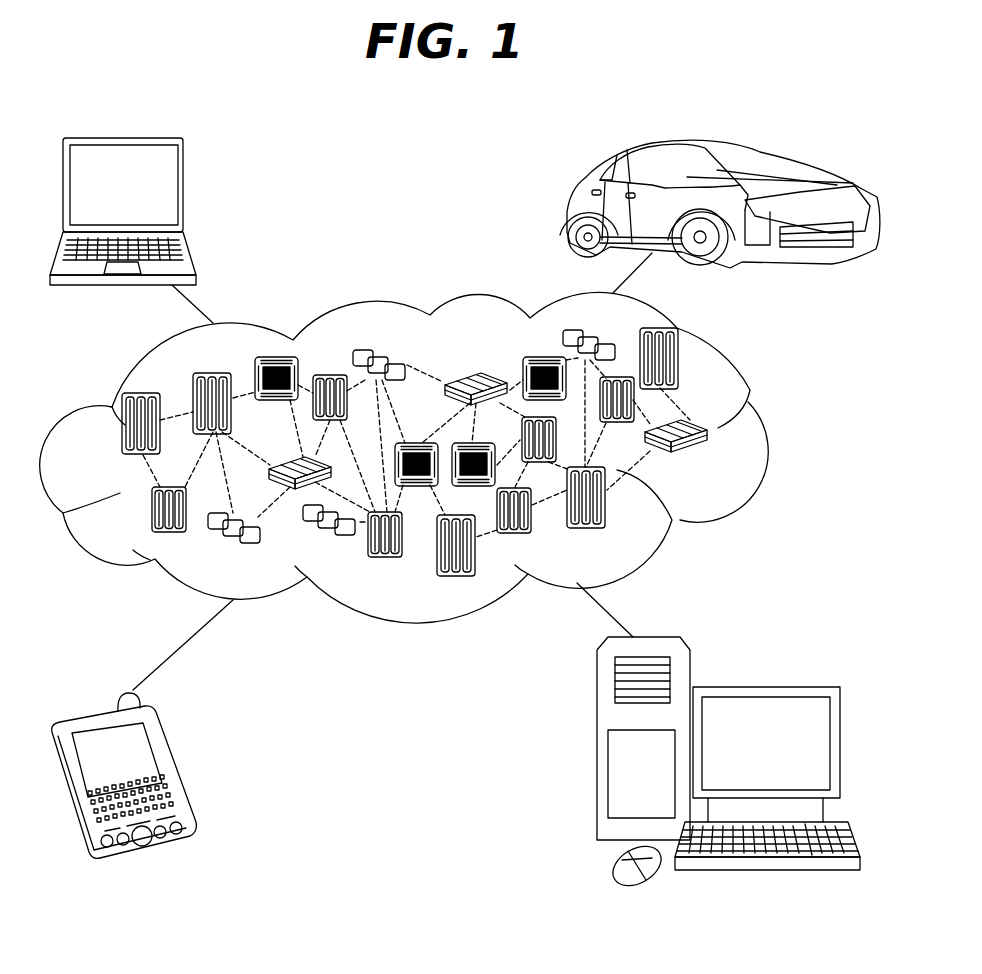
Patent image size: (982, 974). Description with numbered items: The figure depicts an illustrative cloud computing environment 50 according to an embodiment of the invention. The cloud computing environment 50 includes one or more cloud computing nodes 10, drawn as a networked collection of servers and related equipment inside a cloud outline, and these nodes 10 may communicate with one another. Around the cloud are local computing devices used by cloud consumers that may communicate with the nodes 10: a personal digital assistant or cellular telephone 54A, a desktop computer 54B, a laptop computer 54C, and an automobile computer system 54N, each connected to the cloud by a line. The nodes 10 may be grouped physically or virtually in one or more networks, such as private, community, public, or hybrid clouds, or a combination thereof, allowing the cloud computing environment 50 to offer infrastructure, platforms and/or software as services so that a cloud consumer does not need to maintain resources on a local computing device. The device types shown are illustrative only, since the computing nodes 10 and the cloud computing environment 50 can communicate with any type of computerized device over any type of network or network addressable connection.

The cloud computing nodes 10 is at (718, 461).
The cloud computing environment 50 is at (766, 435).
The personal digital assistant (PDA) or cellular telephone 54A is at (175, 767).
The desktop computer 54B is at (762, 683).
The laptop computer 54C is at (184, 192).
The automobile computer system 54N is at (570, 212).